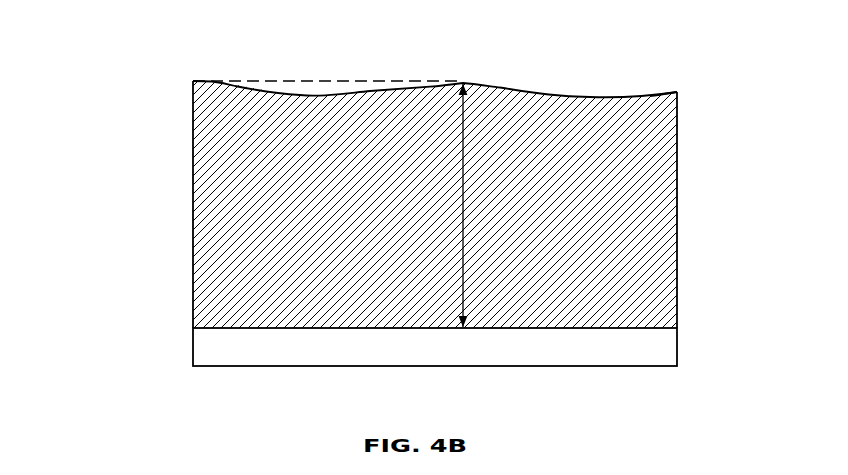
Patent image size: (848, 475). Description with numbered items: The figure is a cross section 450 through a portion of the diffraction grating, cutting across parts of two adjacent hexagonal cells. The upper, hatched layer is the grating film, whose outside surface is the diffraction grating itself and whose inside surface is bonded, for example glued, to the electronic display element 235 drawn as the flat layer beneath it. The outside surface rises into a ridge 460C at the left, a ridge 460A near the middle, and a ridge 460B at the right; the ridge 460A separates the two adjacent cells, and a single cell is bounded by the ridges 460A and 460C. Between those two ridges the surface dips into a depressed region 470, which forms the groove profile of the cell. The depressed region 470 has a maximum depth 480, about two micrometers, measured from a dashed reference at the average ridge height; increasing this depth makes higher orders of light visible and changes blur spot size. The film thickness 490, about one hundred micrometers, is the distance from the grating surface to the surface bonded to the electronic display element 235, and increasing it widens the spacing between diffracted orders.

The cross section 450 is at (36, 56).
The ridge 460A is at (461, 81).
The ridge 460B is at (678, 92).
The ridge 460C is at (203, 84).
The depressed region 470 is at (318, 98).
The maximum depth 480 is at (337, 88).
The film thickness 490 is at (468, 145).
The electronic display element 235 is at (679, 347).